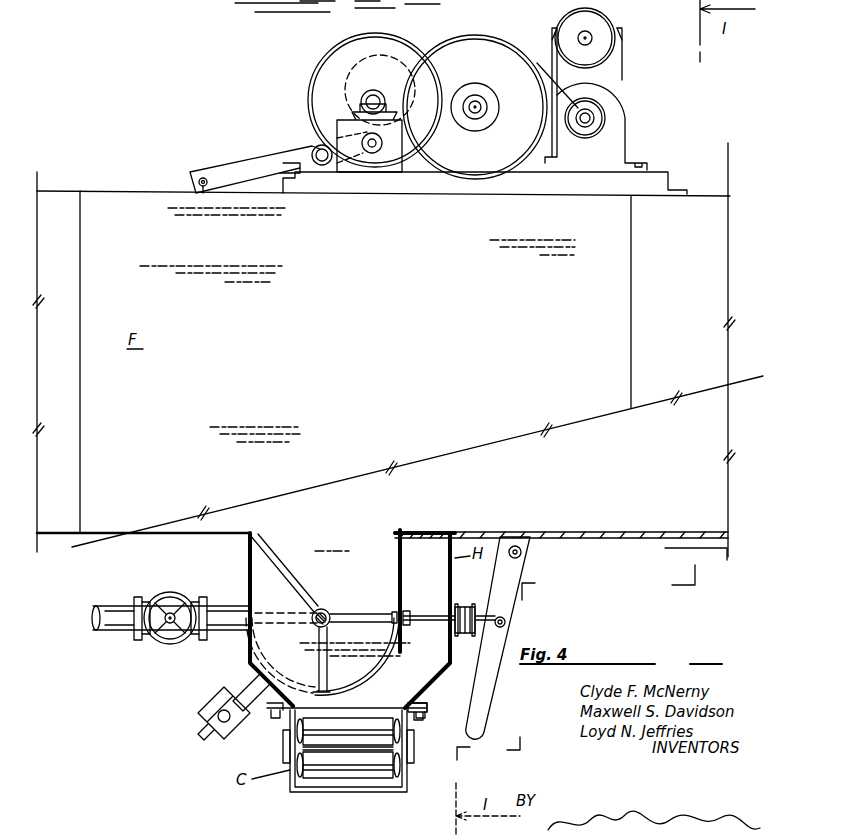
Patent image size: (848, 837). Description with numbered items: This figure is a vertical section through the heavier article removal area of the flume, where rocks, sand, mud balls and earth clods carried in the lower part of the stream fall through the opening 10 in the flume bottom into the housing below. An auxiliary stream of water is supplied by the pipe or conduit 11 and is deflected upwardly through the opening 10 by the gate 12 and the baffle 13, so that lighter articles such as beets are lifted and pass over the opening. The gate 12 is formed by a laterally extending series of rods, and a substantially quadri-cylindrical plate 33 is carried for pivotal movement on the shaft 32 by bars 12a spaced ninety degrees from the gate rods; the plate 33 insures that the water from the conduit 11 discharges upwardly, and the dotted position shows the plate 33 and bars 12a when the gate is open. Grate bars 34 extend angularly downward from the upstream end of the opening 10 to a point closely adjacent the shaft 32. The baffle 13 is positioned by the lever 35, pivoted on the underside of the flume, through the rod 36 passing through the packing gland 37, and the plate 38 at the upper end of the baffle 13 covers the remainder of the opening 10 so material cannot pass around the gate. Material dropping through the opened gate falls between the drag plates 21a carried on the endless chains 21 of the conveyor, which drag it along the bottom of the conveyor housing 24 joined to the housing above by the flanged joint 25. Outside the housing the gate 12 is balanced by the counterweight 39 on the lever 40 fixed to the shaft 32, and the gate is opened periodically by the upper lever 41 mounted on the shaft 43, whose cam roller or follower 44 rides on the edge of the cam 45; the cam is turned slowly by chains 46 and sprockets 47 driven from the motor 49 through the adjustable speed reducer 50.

The opening 10 is at (345, 535).
The pipe or conduit 11 is at (223, 605).
The gate 12 is at (350, 618).
The bars 12a is at (293, 615).
The baffle 13 is at (398, 577).
The endless chains 21 is at (400, 747).
The drag plates 21a is at (358, 752).
The conveyor housing 24 is at (402, 771).
The flanged joint 25 is at (426, 707).
The shaft 32 is at (320, 608).
The quadri-cylindrical plate 33 is at (268, 653).
The grate bars 34 is at (272, 556).
The lever 35 is at (508, 637).
The rod 36 is at (415, 615).
The packing gland 37 is at (457, 610).
The plate 38 is at (428, 530).
The counterweight 39 is at (208, 705).
The lever 40 is at (247, 683).
The upper lever 41 is at (250, 159).
The shaft 43 is at (322, 165).
The cam roller or follower 44 is at (380, 152).
The cam 45 is at (348, 80).
The chains 46 is at (408, 50).
The sprockets 47 is at (347, 57).
The motor 49 is at (612, 25).
The adjustable speed reducer 50 is at (616, 118).